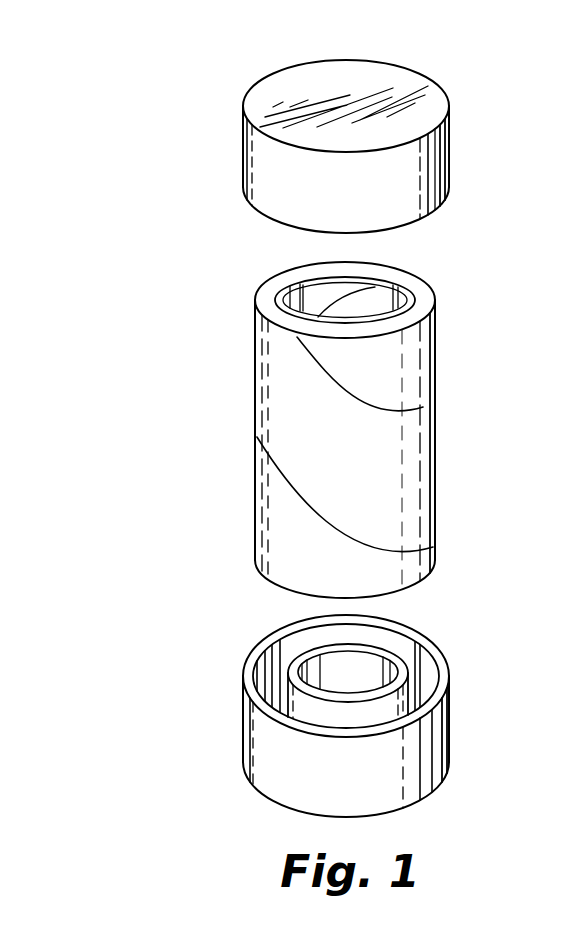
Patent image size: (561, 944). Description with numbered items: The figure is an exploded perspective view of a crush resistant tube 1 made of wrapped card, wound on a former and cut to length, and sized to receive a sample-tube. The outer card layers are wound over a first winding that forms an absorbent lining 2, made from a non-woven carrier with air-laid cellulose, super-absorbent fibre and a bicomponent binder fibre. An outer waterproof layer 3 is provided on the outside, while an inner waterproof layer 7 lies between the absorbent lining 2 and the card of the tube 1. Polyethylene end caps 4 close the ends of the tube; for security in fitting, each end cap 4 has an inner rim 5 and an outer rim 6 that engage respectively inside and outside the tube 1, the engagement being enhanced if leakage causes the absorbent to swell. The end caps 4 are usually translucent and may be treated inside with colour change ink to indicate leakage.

The crush resistant tube 1 is at (383, 407).
The absorbent lining 2 is at (378, 300).
The outer waterproof layer 3 is at (380, 503).
The end cap 4 is at (330, 88).
The inner rim 5 is at (377, 652).
The outer rim 6 is at (374, 715).
The inner waterproof layer 7 is at (323, 275).